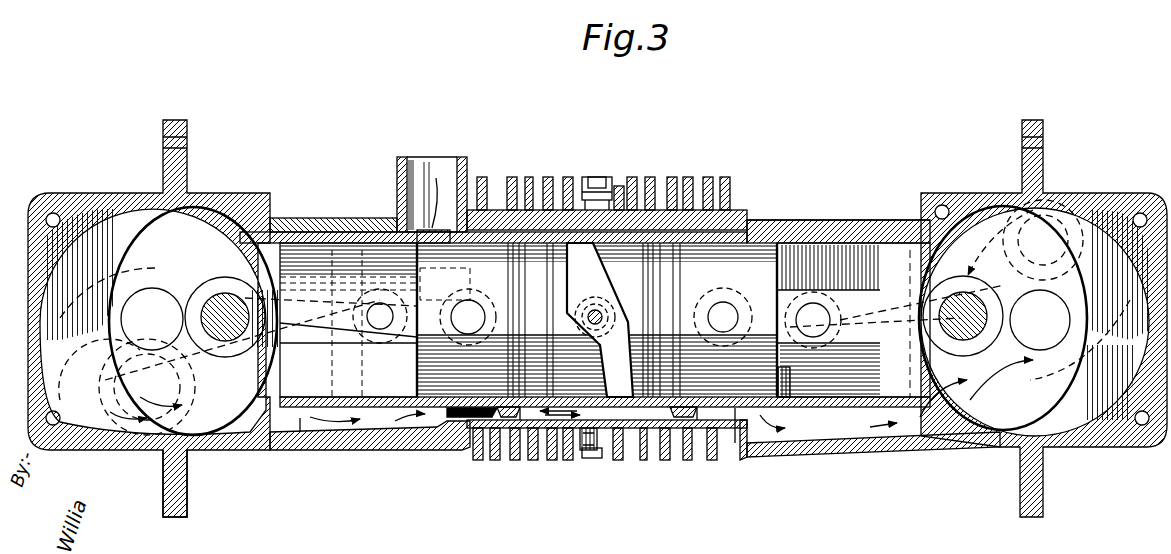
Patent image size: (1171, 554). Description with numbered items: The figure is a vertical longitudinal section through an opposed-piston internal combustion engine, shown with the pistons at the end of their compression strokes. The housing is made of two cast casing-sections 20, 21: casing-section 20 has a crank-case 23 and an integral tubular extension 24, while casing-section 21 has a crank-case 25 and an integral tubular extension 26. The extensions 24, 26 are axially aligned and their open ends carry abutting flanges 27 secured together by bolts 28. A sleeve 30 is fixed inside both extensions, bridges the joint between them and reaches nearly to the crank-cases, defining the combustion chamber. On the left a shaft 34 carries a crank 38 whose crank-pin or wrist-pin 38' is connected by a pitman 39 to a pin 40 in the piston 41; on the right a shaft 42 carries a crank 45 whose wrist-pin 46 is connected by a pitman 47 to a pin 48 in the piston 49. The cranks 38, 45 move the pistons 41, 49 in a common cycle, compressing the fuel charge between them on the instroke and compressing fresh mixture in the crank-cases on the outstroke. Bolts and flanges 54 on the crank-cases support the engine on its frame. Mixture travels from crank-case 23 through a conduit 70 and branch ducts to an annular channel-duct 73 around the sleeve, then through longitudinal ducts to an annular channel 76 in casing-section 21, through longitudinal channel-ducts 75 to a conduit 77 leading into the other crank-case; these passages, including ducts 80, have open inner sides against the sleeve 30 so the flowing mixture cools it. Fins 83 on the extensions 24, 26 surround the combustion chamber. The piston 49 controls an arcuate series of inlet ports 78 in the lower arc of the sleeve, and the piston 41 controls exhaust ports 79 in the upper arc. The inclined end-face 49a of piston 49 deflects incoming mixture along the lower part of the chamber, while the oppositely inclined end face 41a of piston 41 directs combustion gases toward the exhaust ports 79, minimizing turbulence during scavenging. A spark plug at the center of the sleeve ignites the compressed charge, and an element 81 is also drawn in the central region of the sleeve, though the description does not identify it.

The casing-section 20 is at (349, 213).
The casing-section 21 is at (838, 218).
The crank-case 23 is at (105, 200).
The tubular extension 24 is at (297, 218).
The crank-case 25 is at (995, 200).
The tubular extension 26 is at (778, 222).
The abutting flanges 27 is at (603, 460).
The bolts 28 is at (592, 450).
The sleeve 30 is at (387, 410).
The shaft 34 is at (152, 319).
The crank 38 is at (168, 321).
The crank-pin or wrist-pin 38' is at (211, 307).
The pitman 39 is at (370, 320).
The pin 40 is at (418, 343).
The piston 41 is at (553, 263).
The inclined end face 41a is at (543, 427).
The shaft 42 is at (1040, 320).
The crank 45 is at (977, 407).
The wrist-pin or crank-pin 46 is at (970, 307).
The pitman 47 is at (912, 313).
The pin 48 is at (731, 310).
The piston 49 is at (753, 253).
The inclined end-face 49a is at (643, 297).
The bolts and flanges 54 is at (187, 485).
The conduit 70 is at (325, 437).
The annular channel-duct 73 is at (488, 453).
The longitudinal channel-ducts 75 is at (733, 413).
The annular channel 76 is at (683, 418).
The conduit 77 is at (824, 433).
The inlet ports 78 is at (791, 372).
The exhaust ports 79 is at (437, 228).
The ducts 80 is at (442, 167).
The rocker lever 81 is at (610, 303).
The fins 83 is at (710, 447).